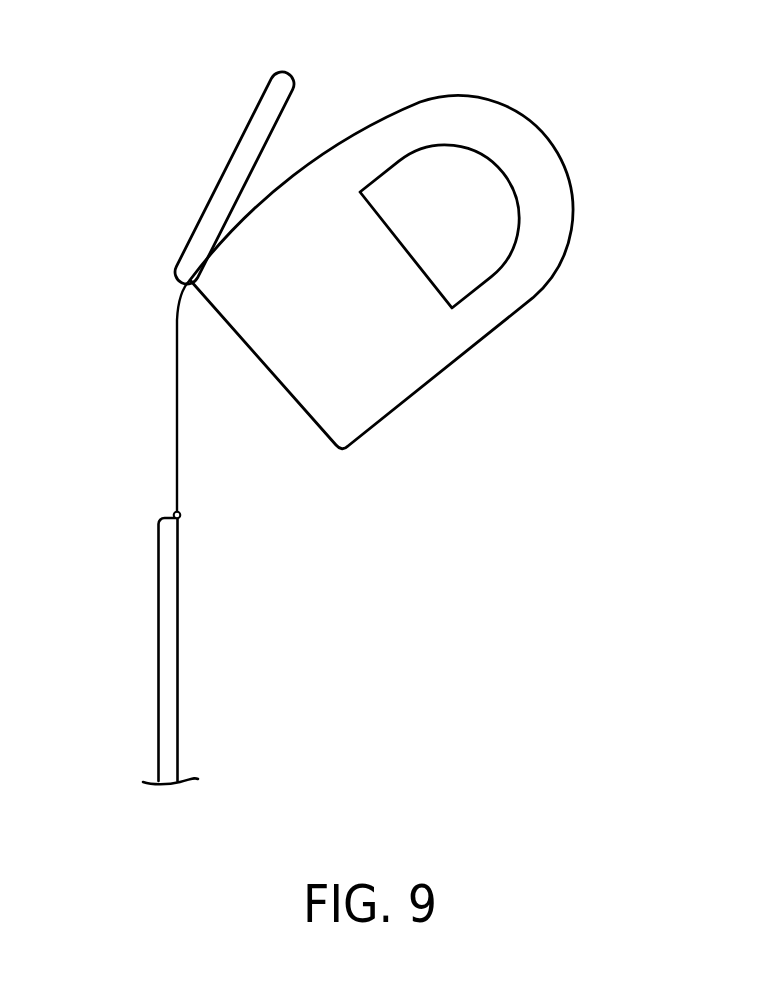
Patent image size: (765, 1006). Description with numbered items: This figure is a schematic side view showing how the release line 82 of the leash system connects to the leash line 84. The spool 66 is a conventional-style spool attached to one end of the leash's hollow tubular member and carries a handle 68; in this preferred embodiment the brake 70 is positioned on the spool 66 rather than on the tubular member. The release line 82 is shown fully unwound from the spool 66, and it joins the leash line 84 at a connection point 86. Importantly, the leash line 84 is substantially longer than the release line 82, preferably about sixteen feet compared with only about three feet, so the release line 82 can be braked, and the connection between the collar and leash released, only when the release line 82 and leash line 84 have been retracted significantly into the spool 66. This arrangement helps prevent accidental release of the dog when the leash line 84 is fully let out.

The spool 66 is at (378, 120).
The handle 68 is at (548, 153).
The brake 70 is at (243, 133).
The release line 82 is at (158, 702).
The leash line 84 is at (178, 671).
The connection point 86 is at (181, 514).